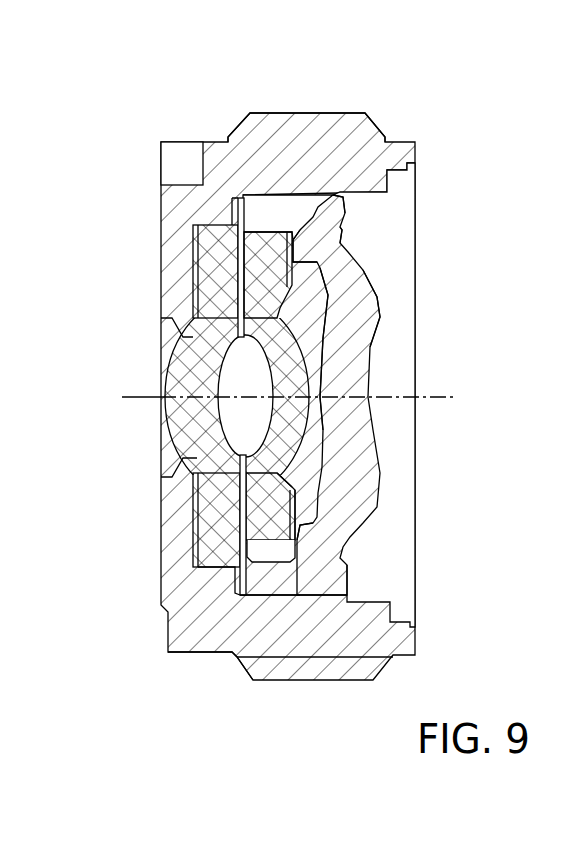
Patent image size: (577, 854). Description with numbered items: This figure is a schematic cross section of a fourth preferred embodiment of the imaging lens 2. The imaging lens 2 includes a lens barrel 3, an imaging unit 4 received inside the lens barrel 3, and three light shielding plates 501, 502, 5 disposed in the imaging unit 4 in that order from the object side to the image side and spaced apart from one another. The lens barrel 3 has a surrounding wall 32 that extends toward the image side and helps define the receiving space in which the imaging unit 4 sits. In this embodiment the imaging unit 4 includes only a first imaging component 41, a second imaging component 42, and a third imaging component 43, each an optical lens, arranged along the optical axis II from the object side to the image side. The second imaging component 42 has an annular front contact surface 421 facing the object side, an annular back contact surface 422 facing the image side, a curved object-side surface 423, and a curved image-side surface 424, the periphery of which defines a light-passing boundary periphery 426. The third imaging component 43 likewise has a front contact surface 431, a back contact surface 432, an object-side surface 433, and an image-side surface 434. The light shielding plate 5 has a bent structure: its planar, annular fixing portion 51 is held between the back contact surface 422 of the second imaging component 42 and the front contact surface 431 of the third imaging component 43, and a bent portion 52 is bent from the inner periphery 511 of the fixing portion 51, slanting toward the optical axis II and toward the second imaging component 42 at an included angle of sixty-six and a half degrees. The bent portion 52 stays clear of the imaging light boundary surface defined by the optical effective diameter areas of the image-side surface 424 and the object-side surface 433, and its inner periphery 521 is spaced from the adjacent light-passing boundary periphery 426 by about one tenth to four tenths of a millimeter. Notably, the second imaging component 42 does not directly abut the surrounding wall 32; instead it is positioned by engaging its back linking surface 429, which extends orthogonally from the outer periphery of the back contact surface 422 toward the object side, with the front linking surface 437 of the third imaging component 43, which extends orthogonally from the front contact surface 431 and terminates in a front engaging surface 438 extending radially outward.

The imaging lens 2 is at (404, 127).
The lens barrel 3 is at (212, 136).
The surrounding wall 32 is at (212, 165).
The imaging unit 4 is at (366, 248).
The first imaging component 41 is at (232, 572).
The second imaging component 42 is at (258, 575).
The third imaging component 43 is at (311, 588).
The front contact surface 421 is at (257, 284).
The back contact surface 422 is at (284, 230).
The object-side surface 423 is at (238, 367).
The image-side surface 424 is at (317, 345).
The light-passing boundary periphery 426 is at (262, 470).
The back linking surface 429 is at (242, 247).
The front contact surface 431 is at (340, 215).
The back contact surface 432 is at (333, 195).
The object-side surface 433 is at (322, 407).
The image-side surface 434 is at (368, 372).
The front linking surface 437 is at (294, 252).
The front engaging surface 438 is at (290, 247).
The light shielding plate 5 is at (293, 585).
The fixing portion 51 is at (297, 523).
The inner periphery 511 is at (290, 508).
The bent portion 52 is at (282, 500).
The inner periphery 521 is at (283, 477).
The light shielding plate 501 is at (228, 545).
The light shielding plate 502 is at (230, 613).
The optical axis II is at (275, 398).